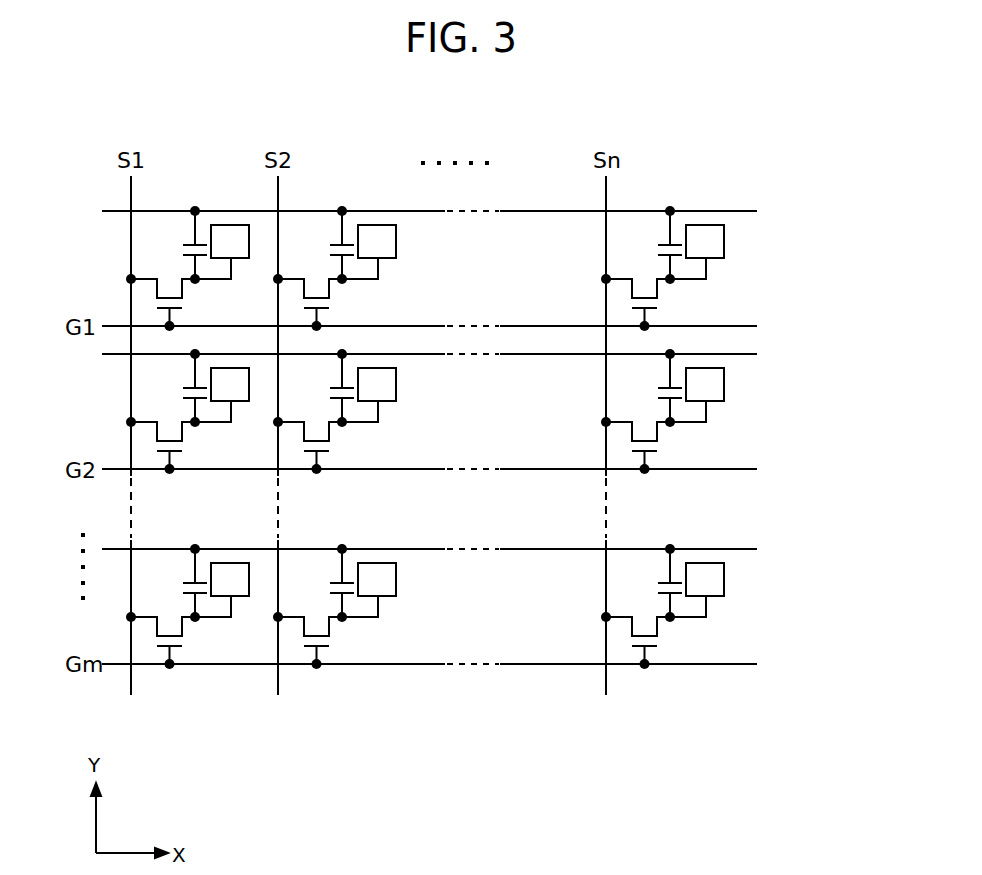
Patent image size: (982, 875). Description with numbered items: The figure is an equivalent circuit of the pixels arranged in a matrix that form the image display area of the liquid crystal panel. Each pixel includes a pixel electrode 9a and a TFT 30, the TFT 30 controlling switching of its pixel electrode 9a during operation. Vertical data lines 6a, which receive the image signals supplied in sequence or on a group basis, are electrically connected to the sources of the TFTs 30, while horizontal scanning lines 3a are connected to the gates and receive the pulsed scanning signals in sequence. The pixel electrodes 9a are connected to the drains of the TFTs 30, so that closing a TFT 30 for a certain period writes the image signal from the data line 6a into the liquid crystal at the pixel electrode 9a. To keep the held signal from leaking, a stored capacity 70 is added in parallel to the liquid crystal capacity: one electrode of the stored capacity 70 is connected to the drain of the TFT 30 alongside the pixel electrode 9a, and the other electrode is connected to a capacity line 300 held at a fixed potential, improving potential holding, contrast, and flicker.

The data line 6a is at (647, 170).
The capacity line 300 is at (781, 563).
The scanning line 3a is at (805, 664).
The stored capacity 70 is at (180, 250).
The TFT 30 is at (150, 293).
The pixel electrode 9a is at (748, 610).